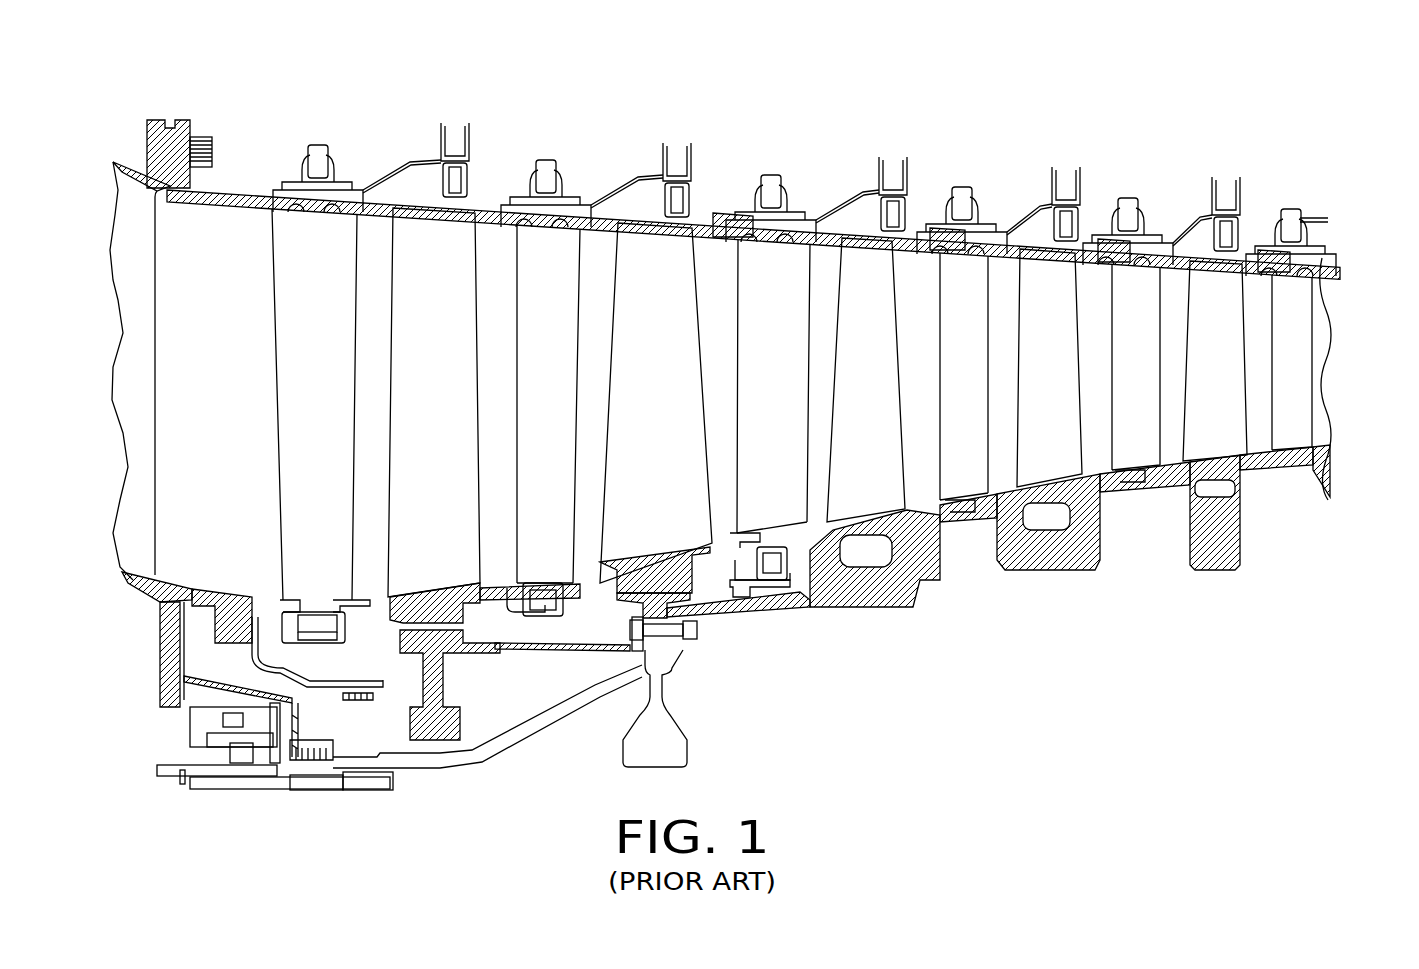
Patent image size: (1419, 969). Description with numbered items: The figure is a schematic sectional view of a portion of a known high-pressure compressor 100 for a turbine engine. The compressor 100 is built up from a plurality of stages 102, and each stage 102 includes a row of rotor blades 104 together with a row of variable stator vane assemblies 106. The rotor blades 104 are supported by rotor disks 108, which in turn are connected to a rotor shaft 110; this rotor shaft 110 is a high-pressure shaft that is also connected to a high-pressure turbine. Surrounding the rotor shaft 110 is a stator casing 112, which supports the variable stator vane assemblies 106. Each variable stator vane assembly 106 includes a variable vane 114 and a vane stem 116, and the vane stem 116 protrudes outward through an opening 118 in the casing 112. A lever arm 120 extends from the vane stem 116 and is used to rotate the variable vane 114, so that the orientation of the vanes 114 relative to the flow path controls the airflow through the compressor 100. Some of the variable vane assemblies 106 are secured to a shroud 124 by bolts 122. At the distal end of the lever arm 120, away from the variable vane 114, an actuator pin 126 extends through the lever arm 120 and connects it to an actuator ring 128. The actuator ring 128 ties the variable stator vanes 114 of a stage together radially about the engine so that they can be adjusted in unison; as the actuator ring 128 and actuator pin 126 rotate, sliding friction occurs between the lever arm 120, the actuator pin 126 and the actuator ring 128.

The high-pressure compressor 100 is at (283, 85).
The stage 102 is at (370, 267).
The rotor blade 104 is at (412, 459).
The variable stator vane assembly 106 is at (302, 169).
The rotor disk 108 is at (447, 710).
The rotor shaft 110 is at (457, 764).
The stator casing 112 is at (720, 232).
The variable vane 114 is at (298, 285).
The vane stem 116 is at (312, 145).
The opening 118 is at (340, 190).
The lever arm 120 is at (375, 175).
The bolt 122 is at (347, 620).
The shroud 124 is at (313, 642).
The actuator pin 126 is at (447, 125).
The actuator ring 128 is at (453, 158).